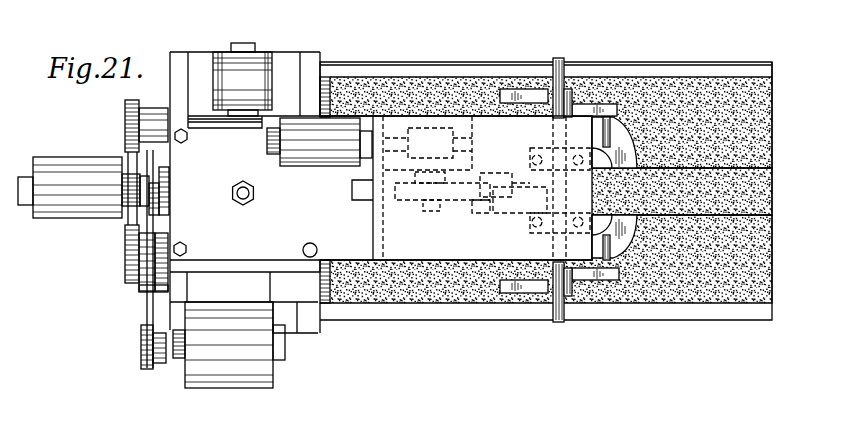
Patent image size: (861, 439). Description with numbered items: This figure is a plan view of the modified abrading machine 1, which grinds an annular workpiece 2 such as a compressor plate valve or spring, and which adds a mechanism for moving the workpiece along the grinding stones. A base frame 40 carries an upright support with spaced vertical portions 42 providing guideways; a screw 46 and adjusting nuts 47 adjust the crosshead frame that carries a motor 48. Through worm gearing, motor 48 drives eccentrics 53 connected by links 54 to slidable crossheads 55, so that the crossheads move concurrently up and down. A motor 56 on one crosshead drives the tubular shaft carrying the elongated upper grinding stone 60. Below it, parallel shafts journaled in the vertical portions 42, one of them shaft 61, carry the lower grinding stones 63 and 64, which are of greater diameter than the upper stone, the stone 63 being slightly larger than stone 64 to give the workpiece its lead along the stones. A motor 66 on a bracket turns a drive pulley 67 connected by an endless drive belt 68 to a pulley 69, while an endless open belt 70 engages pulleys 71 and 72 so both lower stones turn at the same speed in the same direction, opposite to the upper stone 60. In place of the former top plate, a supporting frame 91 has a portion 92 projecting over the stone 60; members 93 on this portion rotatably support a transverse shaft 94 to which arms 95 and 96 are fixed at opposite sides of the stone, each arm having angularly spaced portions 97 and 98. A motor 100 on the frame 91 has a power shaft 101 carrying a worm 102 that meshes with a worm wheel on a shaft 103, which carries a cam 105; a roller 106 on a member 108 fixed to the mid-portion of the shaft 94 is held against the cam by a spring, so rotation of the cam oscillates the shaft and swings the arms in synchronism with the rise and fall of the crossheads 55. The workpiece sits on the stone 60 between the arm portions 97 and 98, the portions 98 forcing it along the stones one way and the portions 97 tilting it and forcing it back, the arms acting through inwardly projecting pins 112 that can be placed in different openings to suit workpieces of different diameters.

The abrading or grinding machine 1 is at (210, 47).
The workpiece 2 is at (627, 150).
The base frame 40 is at (411, 304).
The spaced vertical portions 42 is at (179, 53).
The screw 46 is at (243, 181).
The adjusting nuts 47 is at (243, 205).
The motor 48 is at (258, 66).
The eccentrics 53 is at (166, 183).
The links 54 is at (167, 212).
The slidable crossheads 55 is at (150, 226).
The motor 56 is at (78, 220).
The abrading or grinding stone 60 is at (752, 192).
The longitudinal shaft 61 is at (164, 109).
The abrading or grinding stone 63 is at (695, 107).
The abrading or grinding stone 64 is at (740, 277).
The motor 66 is at (229, 370).
The drive pulley 67 is at (141, 350).
The endless drive belt 68 is at (150, 316).
The pulley 69 is at (157, 288).
The endless open belt 70 is at (140, 272).
The pulley 71 is at (125, 113).
The pulley 72 is at (126, 267).
The supporting frame 91 is at (207, 243).
The frame portion 92 is at (481, 127).
The members 93 is at (541, 148).
The shaft 94 is at (558, 57).
The arm 95 is at (568, 102).
The arm 96 is at (578, 112).
The arm portions 97 is at (518, 95).
The arm portions 98 is at (606, 124).
The motor 100 is at (307, 154).
The power shaft 101 is at (390, 137).
The worm 102 is at (427, 135).
The shaft 103 is at (434, 199).
The cam 105 is at (410, 198).
The roller 106 is at (510, 184).
The member 108 is at (546, 228).
The pins 112 is at (515, 108).